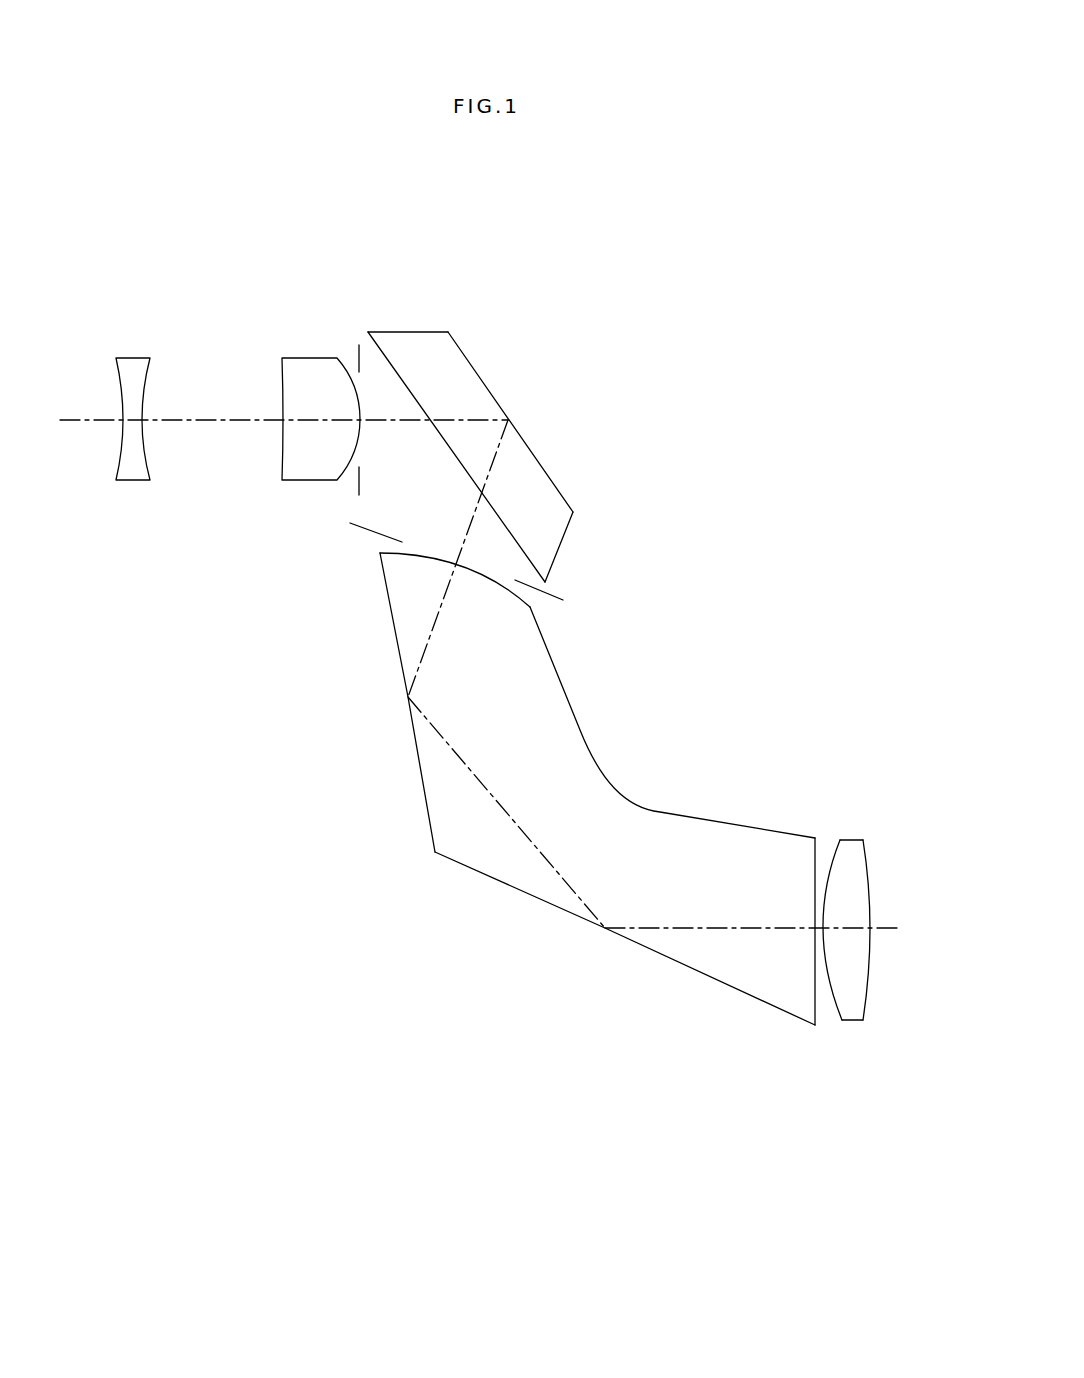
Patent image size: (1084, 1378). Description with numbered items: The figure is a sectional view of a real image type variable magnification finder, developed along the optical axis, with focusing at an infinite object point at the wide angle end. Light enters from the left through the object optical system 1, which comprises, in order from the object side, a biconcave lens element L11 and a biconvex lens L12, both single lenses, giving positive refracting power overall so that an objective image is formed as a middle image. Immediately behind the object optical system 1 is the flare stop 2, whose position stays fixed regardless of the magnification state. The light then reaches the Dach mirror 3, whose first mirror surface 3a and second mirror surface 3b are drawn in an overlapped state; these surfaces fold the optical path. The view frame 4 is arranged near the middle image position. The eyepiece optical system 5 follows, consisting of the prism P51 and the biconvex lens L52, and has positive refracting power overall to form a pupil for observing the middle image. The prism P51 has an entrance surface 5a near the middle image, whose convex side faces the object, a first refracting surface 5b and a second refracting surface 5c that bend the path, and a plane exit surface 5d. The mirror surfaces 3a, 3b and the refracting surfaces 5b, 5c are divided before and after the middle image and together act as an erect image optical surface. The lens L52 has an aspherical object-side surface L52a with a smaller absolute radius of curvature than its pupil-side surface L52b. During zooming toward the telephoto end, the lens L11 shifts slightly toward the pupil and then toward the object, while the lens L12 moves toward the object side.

The object optical system 1 is at (337, 300).
The biconcave lens element L11 is at (138, 358).
The biconvex lens L12 is at (320, 358).
The flare stop 2 is at (355, 357).
The Dach mirror 3 is at (482, 322).
The first mirror surface 3a is at (455, 372).
The second mirror surface 3b is at (510, 422).
The view frame 4 is at (553, 592).
The eyepiece optical system 5 is at (583, 835).
The prism P51 is at (530, 720).
The entrance surface 5a is at (430, 553).
The first refracting surface 5b is at (408, 722).
The second refracting surface 5c is at (623, 938).
The exit surface 5d is at (815, 862).
The biconvex lens L52 is at (853, 840).
The object-side surface L52a is at (833, 868).
The pupil-side surface L52b is at (870, 890).